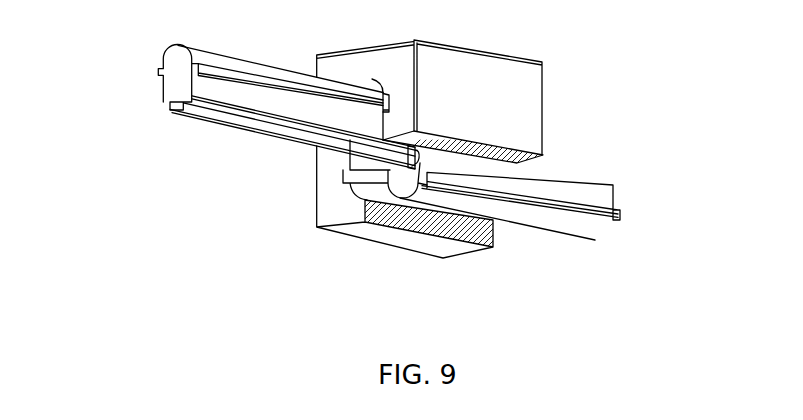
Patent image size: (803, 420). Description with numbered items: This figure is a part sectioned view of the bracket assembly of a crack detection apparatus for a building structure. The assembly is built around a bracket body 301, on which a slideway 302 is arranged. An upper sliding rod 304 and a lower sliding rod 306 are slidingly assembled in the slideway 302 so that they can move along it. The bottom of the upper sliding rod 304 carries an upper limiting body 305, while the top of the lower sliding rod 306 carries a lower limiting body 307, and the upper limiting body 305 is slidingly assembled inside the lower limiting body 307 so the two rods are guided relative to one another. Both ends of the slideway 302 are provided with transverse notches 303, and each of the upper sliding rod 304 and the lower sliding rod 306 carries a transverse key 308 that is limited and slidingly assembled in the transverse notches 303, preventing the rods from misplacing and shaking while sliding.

The bracket body 301 is at (549, 115).
The slideway 302 is at (372, 79).
The transverse notch 303 is at (336, 176).
The upper sliding rod 304 is at (172, 47).
The upper limiting body 305 is at (166, 114).
The lower sliding rod 306 is at (614, 229).
The lower limiting body 307 is at (419, 153).
The transverse key 308 is at (152, 79).